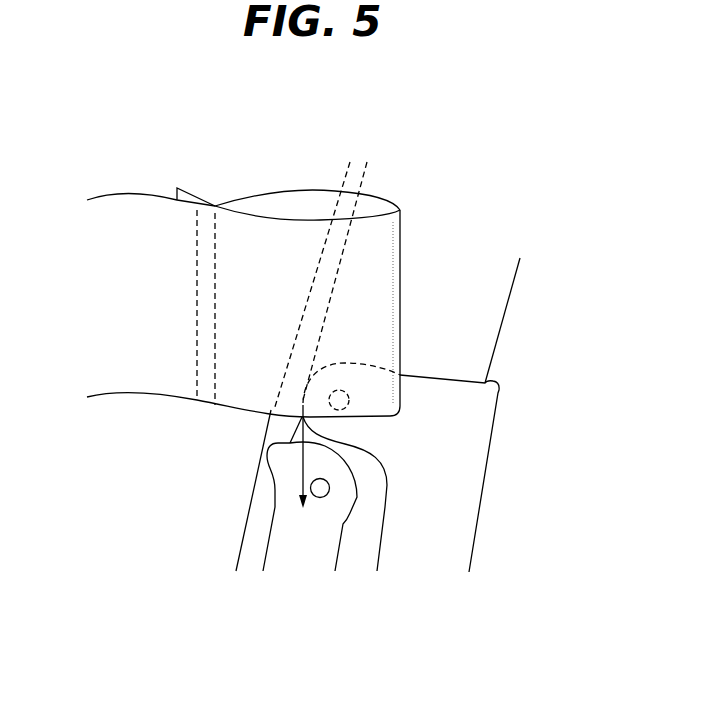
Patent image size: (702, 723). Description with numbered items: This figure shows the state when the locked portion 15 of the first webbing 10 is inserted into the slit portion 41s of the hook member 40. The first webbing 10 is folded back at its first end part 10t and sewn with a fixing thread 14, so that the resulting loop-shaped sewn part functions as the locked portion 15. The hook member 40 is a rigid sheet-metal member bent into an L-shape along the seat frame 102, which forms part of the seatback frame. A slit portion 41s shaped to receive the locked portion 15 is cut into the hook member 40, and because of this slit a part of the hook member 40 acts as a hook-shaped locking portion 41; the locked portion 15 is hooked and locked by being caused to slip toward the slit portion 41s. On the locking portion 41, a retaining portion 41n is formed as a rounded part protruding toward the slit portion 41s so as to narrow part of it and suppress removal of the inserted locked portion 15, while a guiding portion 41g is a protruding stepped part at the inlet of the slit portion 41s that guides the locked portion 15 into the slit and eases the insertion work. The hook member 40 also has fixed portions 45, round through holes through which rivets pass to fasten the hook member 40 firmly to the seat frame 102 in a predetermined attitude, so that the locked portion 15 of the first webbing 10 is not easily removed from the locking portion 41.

The first webbing 10 is at (147, 205).
The first end part of the first webbing 10t is at (241, 162).
The fixing thread 14 is at (196, 302).
The locked portion 15 is at (402, 263).
The fixed portion 45 is at (345, 388).
The seat frame 102 is at (502, 335).
The hook member 40 is at (462, 528).
The locking portion 41 is at (270, 533).
The guiding portion 41g is at (288, 443).
The retaining portion 41n is at (353, 488).
The slit portion 41s is at (362, 550).